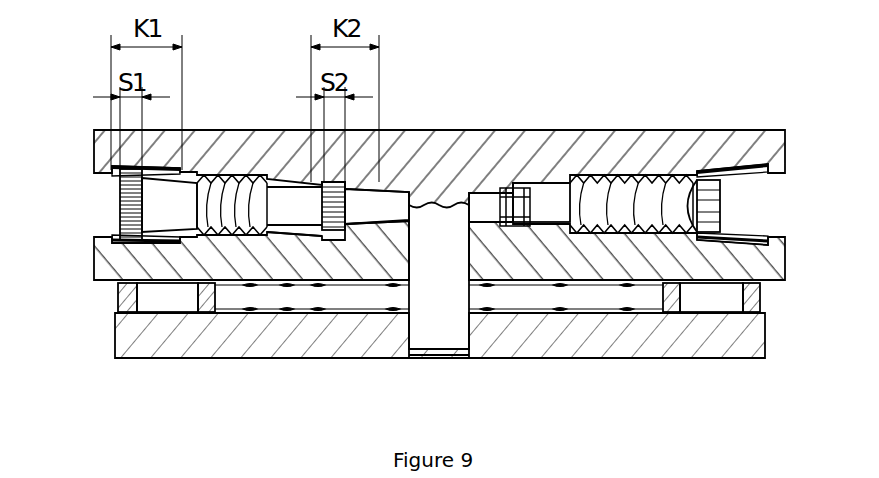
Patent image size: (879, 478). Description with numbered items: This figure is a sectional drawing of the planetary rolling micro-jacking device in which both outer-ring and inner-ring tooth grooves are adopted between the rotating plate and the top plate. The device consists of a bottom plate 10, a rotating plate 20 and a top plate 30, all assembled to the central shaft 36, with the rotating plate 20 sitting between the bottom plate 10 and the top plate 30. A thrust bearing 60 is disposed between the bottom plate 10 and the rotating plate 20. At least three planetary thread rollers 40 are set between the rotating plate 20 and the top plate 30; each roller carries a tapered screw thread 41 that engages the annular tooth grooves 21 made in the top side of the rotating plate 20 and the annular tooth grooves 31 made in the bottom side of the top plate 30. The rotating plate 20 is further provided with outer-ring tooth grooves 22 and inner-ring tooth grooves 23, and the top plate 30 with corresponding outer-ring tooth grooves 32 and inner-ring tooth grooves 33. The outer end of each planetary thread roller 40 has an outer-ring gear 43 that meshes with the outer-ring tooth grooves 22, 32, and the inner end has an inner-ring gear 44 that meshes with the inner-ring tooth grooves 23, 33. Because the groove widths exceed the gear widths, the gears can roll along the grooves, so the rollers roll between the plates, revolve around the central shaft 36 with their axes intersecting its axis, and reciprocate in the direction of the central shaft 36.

The bottom plate 10 is at (662, 343).
The rotating plate 20 is at (582, 265).
The annular tooth grooves 21 is at (305, 240).
The outer-ring tooth grooves 22 is at (752, 232).
The inner-ring tooth grooves 23 is at (512, 220).
The top plate 30 is at (593, 148).
The annular tooth grooves 31 is at (653, 177).
The outer-ring tooth grooves 32 is at (113, 173).
The inner-ring tooth grooves 33 is at (378, 184).
The central shaft 36 is at (432, 328).
The planetary thread roller 40 is at (178, 195).
The tapered screw thread 41 is at (220, 180).
The outer-ring gear 43 is at (122, 208).
The inner-ring gear 44 is at (355, 235).
The thrust bearing 60 is at (117, 309).